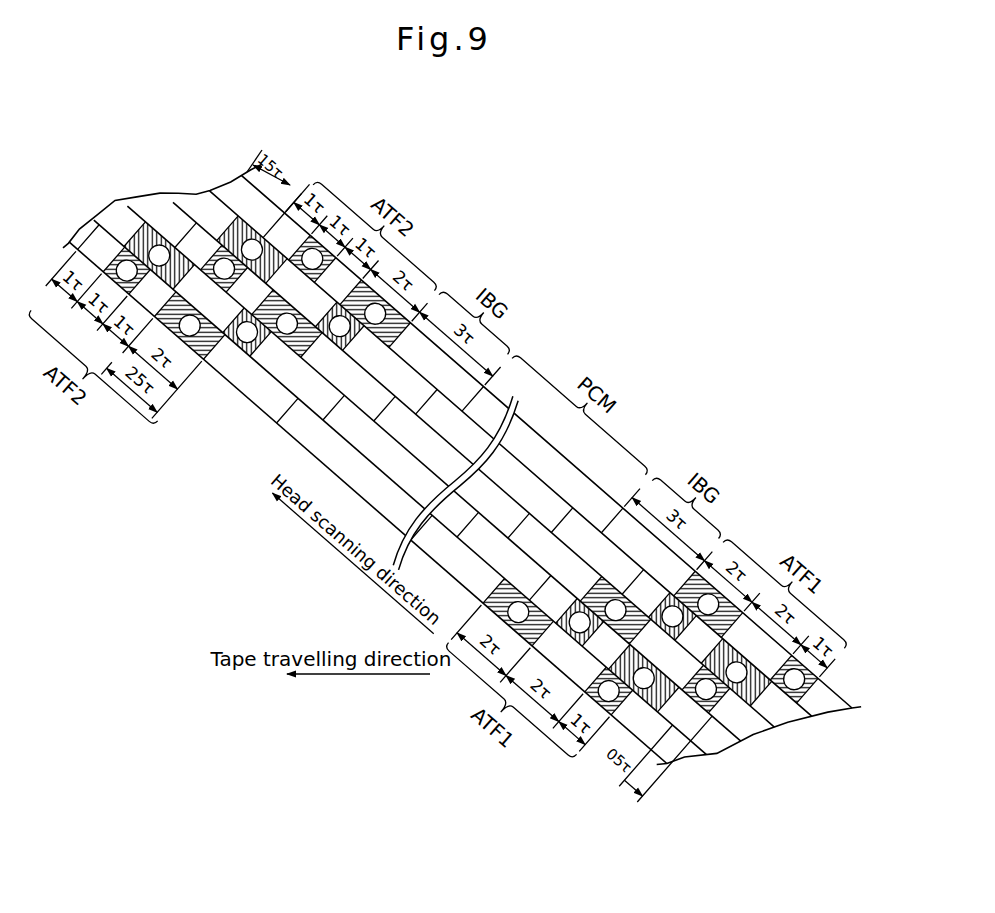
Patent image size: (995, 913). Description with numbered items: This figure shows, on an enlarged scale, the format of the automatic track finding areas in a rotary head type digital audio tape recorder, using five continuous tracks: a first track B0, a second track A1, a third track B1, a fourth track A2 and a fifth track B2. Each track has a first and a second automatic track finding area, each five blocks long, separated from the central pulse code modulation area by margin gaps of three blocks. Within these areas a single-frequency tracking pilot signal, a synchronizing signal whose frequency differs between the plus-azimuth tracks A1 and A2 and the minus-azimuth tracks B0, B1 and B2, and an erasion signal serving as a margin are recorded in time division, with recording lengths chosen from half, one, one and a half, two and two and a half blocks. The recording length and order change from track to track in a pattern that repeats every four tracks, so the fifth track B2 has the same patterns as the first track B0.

The first track B0 is at (685, 757).
The second track A1 is at (717, 753).
The third track B1 is at (753, 735).
The fourth track A2 is at (788, 722).
The fifth track B2 is at (828, 712).